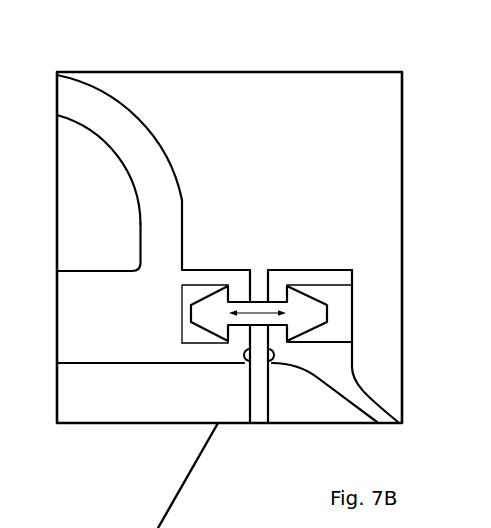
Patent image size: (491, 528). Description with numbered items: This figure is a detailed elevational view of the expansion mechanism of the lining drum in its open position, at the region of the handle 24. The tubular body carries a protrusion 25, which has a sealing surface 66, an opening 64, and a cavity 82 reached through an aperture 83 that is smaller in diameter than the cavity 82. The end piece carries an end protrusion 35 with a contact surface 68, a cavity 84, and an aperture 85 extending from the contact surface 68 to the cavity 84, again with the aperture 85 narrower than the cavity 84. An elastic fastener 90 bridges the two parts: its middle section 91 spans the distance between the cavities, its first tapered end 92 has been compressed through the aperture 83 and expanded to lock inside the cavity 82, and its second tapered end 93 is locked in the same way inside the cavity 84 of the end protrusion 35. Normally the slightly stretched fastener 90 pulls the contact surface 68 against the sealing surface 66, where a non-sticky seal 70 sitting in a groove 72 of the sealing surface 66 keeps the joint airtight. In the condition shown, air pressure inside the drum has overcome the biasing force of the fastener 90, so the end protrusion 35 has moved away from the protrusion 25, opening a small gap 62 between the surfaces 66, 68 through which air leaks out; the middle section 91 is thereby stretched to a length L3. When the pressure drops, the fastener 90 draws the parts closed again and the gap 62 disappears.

The handle 24 is at (107, 108).
The protrusion 25 is at (103, 289).
The end protrusion 35 is at (327, 269).
The gap 62 is at (260, 273).
The opening 64 is at (135, 319).
The sealing surface 66 is at (247, 343).
The contact surface 68 is at (273, 340).
The seal 70 is at (262, 368).
The groove 72 is at (243, 363).
The cavity 82 is at (193, 273).
The aperture 83 is at (237, 273).
The cavity 84 is at (316, 328).
The aperture 85 is at (296, 268).
The elastic fastener 90 is at (190, 292).
The middle section 91 is at (252, 273).
The first tapered end 92 is at (215, 273).
The second tapered end 93 is at (353, 270).
The length L3 is at (294, 325).